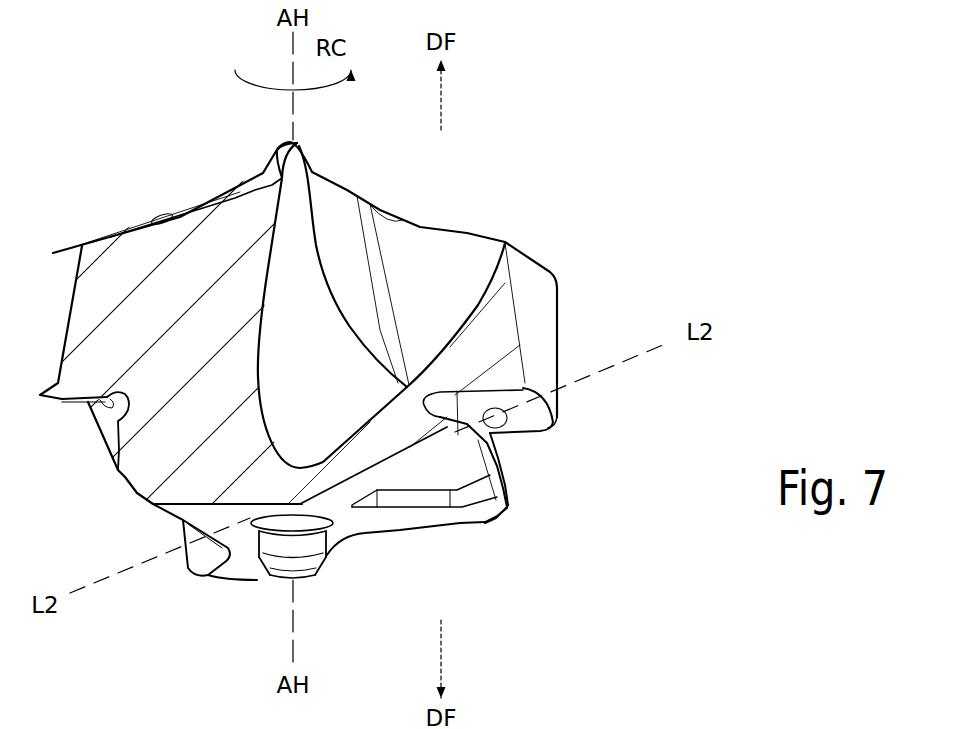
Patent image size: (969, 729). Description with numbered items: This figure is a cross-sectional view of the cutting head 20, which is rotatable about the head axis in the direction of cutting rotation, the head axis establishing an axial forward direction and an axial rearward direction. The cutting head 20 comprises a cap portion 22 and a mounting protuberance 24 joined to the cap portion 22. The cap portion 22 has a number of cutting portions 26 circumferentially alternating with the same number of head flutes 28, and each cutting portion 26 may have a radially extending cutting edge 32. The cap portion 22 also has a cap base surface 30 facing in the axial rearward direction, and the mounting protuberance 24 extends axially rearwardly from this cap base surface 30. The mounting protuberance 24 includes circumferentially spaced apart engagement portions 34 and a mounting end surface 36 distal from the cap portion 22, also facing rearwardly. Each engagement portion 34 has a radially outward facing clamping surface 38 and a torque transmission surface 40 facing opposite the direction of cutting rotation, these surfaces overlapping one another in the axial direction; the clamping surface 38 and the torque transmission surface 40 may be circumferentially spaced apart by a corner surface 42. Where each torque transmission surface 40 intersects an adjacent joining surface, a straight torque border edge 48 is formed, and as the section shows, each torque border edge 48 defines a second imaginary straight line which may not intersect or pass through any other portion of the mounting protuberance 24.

The cutting head 20 is at (470, 152).
The cap portion 22 is at (540, 290).
The mounting protuberance 24 is at (150, 460).
The cutting portion 26 is at (280, 173).
The head flute 28 is at (308, 333).
The cap base surface 30 is at (535, 426).
The radially extending cutting edge 32 is at (284, 172).
The engagement portion 34 is at (208, 555).
The mounting end surface 36 is at (245, 558).
The clamping surface 38 is at (508, 470).
The torque transmission surface 40 is at (412, 472).
The corner surface 42 is at (478, 450).
The torque border edge 48 is at (358, 474).